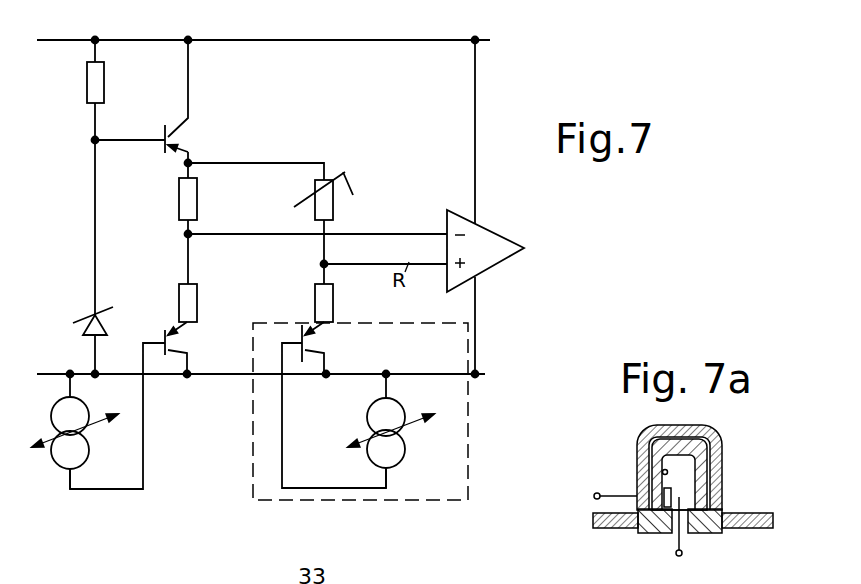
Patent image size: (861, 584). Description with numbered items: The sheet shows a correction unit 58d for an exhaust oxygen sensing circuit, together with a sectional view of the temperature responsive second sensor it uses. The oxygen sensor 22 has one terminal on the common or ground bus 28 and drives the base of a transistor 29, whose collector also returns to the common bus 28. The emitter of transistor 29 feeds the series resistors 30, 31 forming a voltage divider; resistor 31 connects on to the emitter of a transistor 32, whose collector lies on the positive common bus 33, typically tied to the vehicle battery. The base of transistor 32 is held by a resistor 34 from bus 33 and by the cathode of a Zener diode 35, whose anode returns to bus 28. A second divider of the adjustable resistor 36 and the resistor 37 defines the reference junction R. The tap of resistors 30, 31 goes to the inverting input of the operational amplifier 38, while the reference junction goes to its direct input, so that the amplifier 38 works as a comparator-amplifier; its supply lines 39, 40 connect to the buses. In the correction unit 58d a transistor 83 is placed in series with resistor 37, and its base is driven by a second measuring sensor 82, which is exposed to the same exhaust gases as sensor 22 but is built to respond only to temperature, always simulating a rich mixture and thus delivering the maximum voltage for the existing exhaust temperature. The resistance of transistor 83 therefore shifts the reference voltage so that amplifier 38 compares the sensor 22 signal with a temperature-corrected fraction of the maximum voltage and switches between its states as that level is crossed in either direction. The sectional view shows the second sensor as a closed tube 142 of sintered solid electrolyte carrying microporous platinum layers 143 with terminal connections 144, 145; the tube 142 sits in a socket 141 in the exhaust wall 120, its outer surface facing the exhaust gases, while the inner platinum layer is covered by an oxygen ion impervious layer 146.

In FIG. 7, the positive common bus 33 is at (362, 39).
In FIG. 7, the resistor 34 is at (104, 81).
In FIG. 7, the transistor 32 is at (195, 140).
In FIG. 7, the resistor 31 is at (190, 191).
In FIG. 7, the variable resistor 36 is at (328, 200).
In FIG. 7, the resistor 30 is at (190, 299).
In FIG. 7, the resistor 37 is at (330, 298).
In FIG. 7, the Zener diode 35 is at (113, 340).
In FIG. 7, the transistor 29 is at (190, 343).
In FIG. 7, the oxygen sensor 22 is at (88, 452).
In FIG. 7, the common bus 28 is at (213, 378).
In FIG. 7, the correction unit 58d is at (439, 364).
In FIG. 7, the transistor 83 is at (312, 345).
In FIG. 7, the second measuring sensor 82 is at (405, 446).
In FIG. 7, the power supply line 39 is at (475, 125).
In FIG. 7, the operational amplifier 38 is at (483, 262).
In FIG. 7, the power supply line 40 is at (476, 333).
In FIG. 7A, the closed tube 142 is at (722, 461).
In FIG. 7A, the oxygen ion impervious layer 146 is at (722, 492).
In FIG. 7A, the platinum layers 143 is at (663, 470).
In FIG. 7A, the terminal connection 144 is at (597, 492).
In FIG. 7A, the socket 141 is at (708, 534).
In FIG. 7A, the wall 120 is at (738, 528).
In FIG. 7A, the terminal connection 145 is at (675, 556).